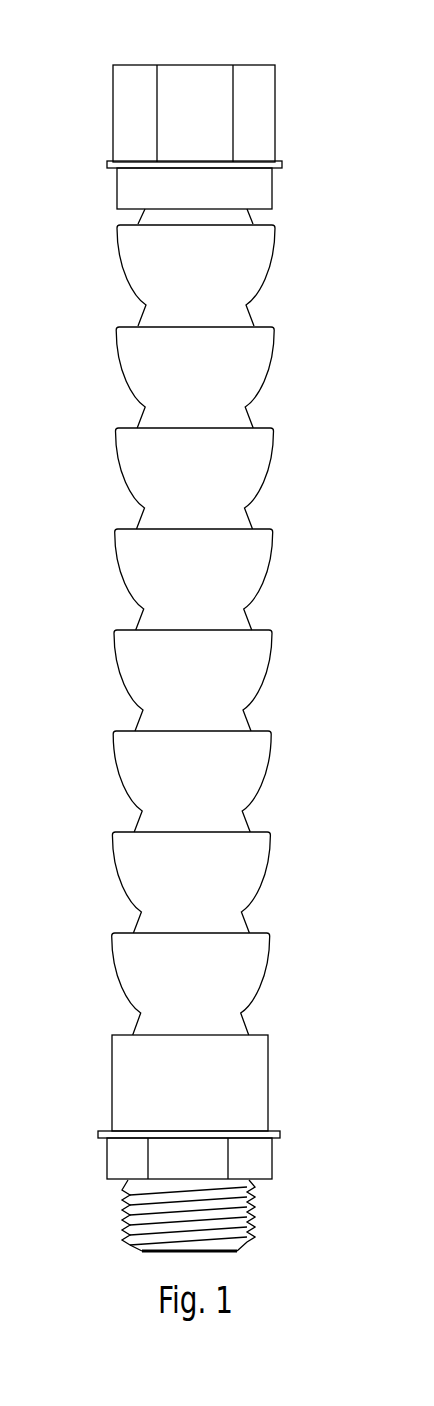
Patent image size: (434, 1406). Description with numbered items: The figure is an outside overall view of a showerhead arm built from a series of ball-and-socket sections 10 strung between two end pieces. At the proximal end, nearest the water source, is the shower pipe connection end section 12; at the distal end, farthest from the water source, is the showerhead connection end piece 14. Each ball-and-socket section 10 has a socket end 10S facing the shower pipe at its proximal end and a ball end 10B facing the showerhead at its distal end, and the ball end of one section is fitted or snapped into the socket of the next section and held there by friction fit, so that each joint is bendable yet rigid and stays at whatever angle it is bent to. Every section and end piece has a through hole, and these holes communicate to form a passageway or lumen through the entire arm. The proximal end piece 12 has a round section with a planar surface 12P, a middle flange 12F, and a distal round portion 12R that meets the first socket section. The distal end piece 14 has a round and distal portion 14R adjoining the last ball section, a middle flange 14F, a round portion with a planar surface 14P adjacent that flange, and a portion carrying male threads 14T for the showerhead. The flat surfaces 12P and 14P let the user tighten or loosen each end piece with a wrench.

The ball-and-socket section 10 is at (198, 630).
The socket end 10S is at (114, 438).
The ball end 10B is at (137, 519).
The shower pipe connection end section 12 is at (192, 117).
The planar surface 12P is at (198, 65).
The middle flange 12F is at (105, 163).
The distal round portion 12R is at (272, 190).
The showerhead connection end piece 14 is at (188, 1140).
The round and distal portion 14R is at (118, 1082).
The middle flange 14F is at (280, 1135).
The planar surface 14P is at (113, 1158).
The male threads 14T is at (248, 1212).